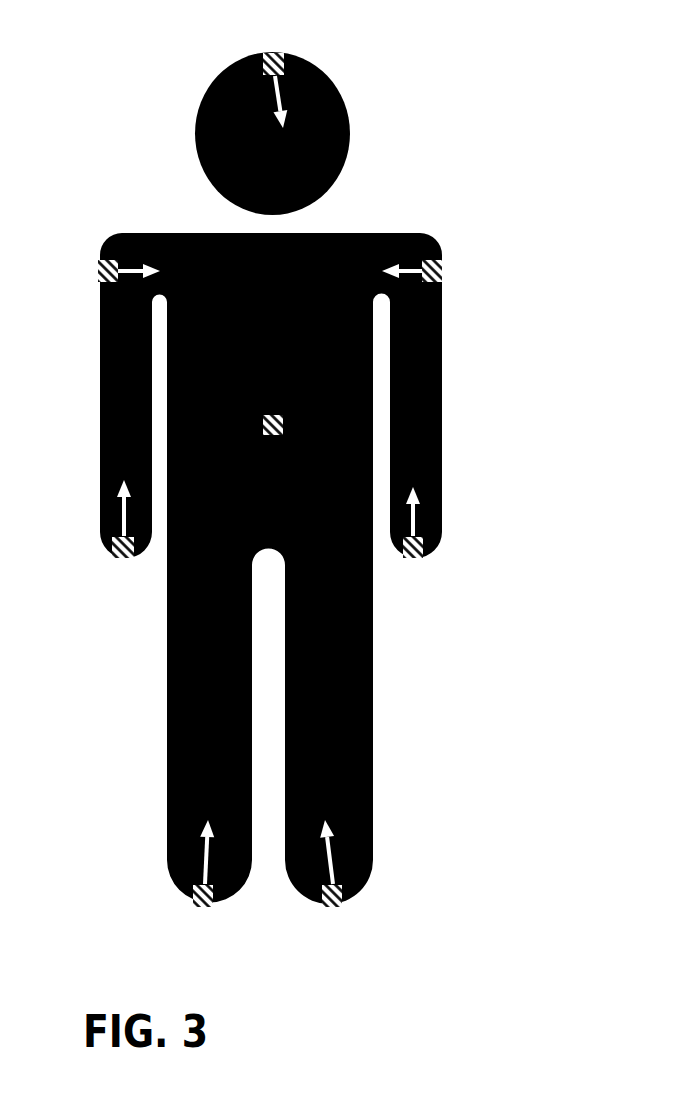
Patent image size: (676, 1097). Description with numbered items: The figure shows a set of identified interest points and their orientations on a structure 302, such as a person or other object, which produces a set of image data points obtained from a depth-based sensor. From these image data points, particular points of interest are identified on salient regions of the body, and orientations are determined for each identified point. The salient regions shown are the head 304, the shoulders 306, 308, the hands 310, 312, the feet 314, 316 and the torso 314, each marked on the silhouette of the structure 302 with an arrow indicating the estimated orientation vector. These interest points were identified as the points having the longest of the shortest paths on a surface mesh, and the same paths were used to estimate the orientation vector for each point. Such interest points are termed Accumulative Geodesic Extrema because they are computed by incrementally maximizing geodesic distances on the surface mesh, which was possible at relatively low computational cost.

The structure 302 is at (343, 102).
The head 304 is at (268, 53).
The shoulder 306 is at (442, 263).
The shoulder 308 is at (100, 263).
The hand 310 is at (112, 557).
The hand 312 is at (422, 556).
The foot and torso 314 is at (270, 437).
The foot 316 is at (337, 905).